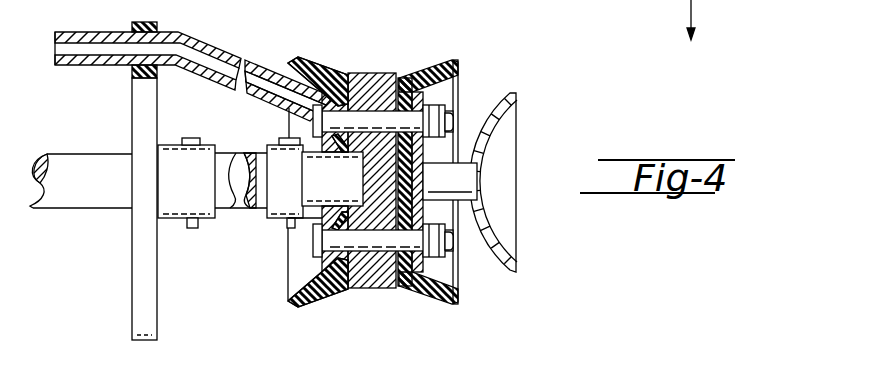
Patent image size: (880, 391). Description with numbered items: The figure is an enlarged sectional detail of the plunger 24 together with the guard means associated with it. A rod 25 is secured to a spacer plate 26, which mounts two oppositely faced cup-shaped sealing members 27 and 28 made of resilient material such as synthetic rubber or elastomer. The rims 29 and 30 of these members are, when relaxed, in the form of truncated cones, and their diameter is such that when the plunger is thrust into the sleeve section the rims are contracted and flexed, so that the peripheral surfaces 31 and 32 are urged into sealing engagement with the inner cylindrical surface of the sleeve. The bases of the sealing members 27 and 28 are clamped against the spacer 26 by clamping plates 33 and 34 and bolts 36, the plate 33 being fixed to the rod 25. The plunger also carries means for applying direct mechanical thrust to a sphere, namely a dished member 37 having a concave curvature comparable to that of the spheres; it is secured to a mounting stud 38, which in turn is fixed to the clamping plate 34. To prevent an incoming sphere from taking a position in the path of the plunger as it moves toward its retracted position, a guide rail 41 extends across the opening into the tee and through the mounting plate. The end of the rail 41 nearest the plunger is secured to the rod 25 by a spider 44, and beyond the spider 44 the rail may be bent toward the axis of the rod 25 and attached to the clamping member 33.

The plunger 24 is at (370, 295).
The rod 25 is at (70, 158).
The spacer plate 26 is at (367, 86).
The cup-shaped sealing member 27 is at (338, 77).
The cup-shaped sealing member 28 is at (404, 288).
The rim 29 is at (289, 76).
The rim 30 is at (420, 277).
The peripheral surface 31 is at (302, 78).
The peripheral surface 32 is at (456, 300).
The clamping plate 33 is at (288, 130).
The clamping plate 34 is at (430, 213).
The bolts 36 is at (380, 117).
The dished member 37 is at (516, 93).
The mounting stud 38 is at (457, 170).
The guide rail 41 is at (97, 32).
The spider 44 is at (135, 290).